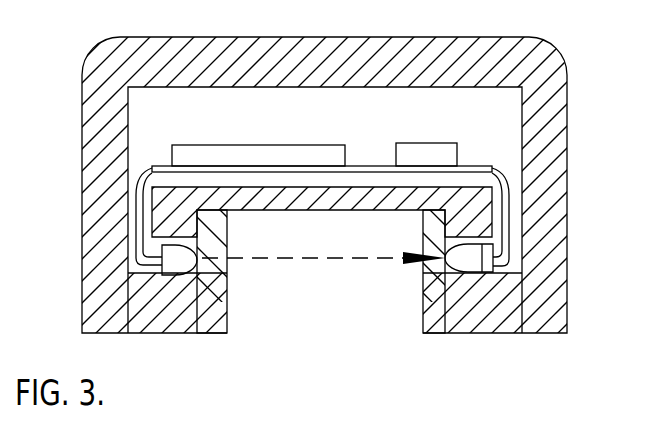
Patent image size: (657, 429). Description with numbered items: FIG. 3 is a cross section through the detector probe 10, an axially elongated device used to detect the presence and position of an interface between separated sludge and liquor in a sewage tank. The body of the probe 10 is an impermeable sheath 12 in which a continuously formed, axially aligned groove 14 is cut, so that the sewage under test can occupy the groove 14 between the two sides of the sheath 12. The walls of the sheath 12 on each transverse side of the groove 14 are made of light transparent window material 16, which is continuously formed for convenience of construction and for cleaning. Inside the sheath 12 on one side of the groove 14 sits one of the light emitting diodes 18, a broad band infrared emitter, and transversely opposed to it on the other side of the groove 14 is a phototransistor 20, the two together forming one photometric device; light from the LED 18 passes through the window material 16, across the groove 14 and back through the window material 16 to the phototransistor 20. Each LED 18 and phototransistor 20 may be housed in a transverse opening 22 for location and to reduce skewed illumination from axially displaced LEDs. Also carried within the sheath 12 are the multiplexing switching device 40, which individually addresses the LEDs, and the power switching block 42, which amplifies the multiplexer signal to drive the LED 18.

The detector probe 10 is at (583, 59).
The impermeable sheath 12 is at (567, 124).
The groove 14 is at (228, 318).
The light transparent window material 16 is at (228, 229).
The light emitting diode 18 is at (175, 247).
The phototransistor 20 is at (455, 243).
The transverse opening 22 is at (145, 278).
The multiplexing switching device 40 is at (257, 145).
The power switching block 42 is at (418, 143).